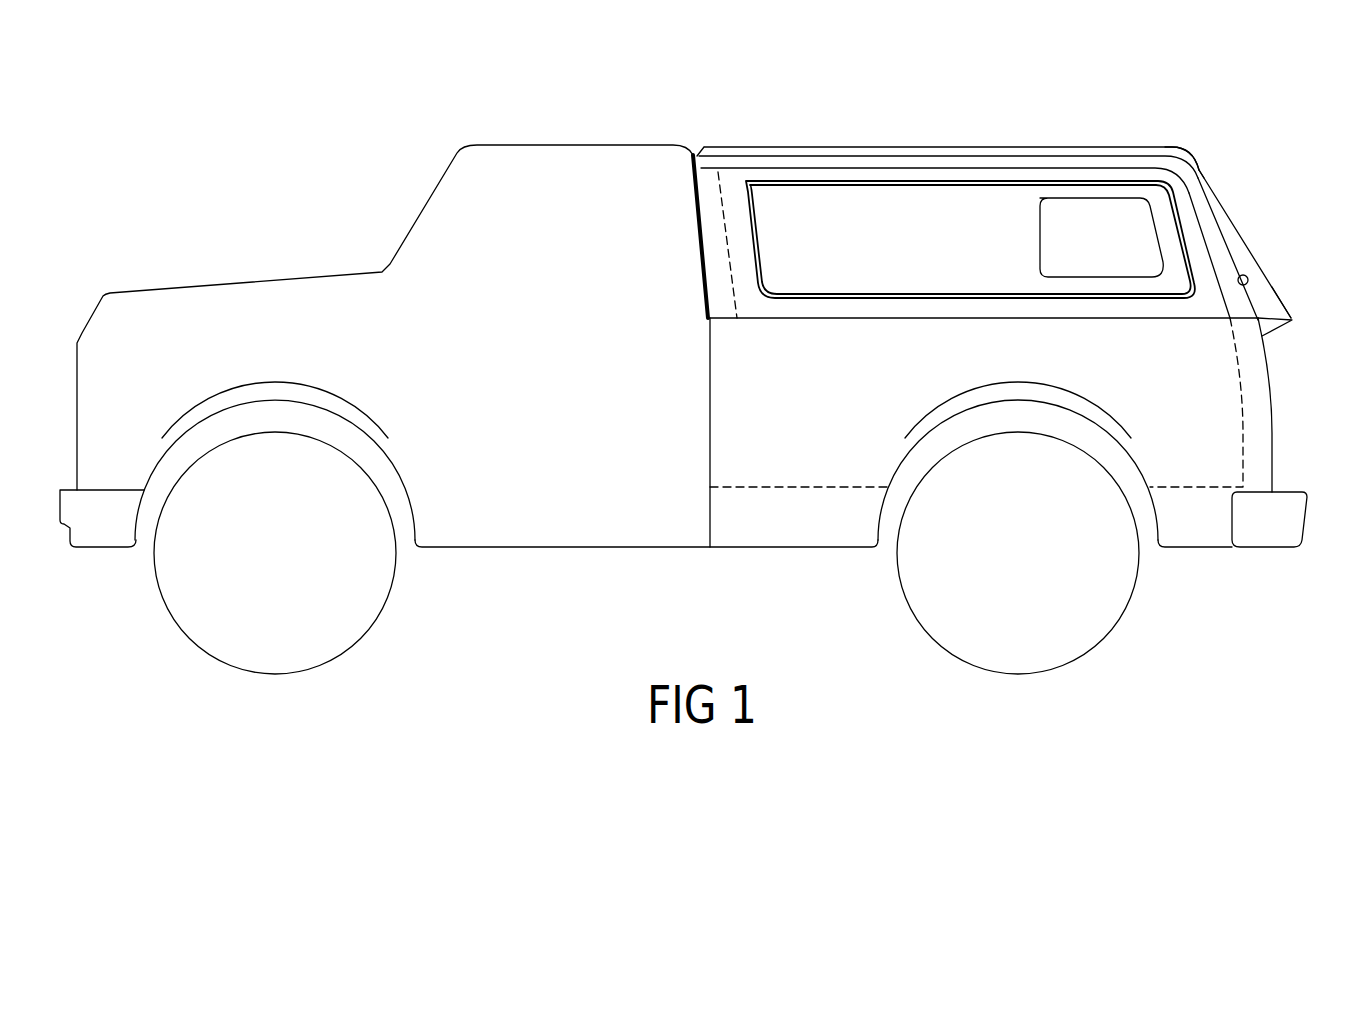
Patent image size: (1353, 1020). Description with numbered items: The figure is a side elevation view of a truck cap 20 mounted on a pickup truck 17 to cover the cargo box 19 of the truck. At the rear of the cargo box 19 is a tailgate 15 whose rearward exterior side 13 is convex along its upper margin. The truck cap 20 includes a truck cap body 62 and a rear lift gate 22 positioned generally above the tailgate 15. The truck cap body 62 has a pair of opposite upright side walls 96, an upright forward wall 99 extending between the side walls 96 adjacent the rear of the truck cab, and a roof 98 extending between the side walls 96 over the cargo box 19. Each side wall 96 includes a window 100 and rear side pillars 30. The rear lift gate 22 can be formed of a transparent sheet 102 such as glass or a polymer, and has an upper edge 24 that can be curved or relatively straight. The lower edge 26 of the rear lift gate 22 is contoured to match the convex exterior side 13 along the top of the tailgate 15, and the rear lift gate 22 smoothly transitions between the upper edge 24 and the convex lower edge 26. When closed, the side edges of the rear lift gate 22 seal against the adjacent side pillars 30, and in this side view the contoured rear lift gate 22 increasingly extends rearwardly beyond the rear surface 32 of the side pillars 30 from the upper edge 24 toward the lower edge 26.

The rearward exterior side 13 is at (1293, 321).
The tailgate 15 is at (1255, 388).
The truck 17 is at (443, 200).
The cargo box 19 is at (1225, 433).
The truck cap 20 is at (1018, 118).
The rear lift gate 22 is at (1240, 238).
The upper edge 24 is at (1197, 173).
The lower edge 26 is at (1277, 303).
The rear side pillar 30 is at (1205, 215).
The rear surface 32 is at (1248, 280).
The truck cap body 62 is at (1088, 148).
The side wall 96 is at (858, 310).
The roof 98 is at (940, 150).
The forward wall 99 is at (727, 247).
The window 100 is at (832, 227).
The transparent sheet 102 is at (1247, 255).